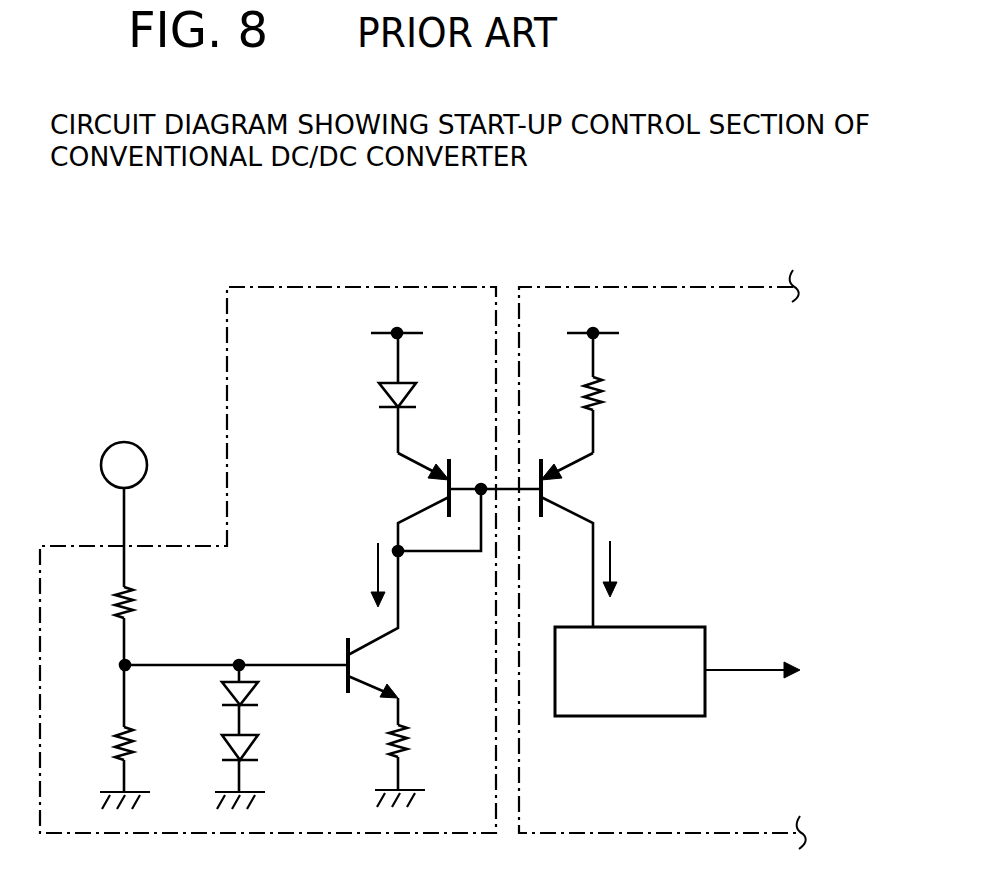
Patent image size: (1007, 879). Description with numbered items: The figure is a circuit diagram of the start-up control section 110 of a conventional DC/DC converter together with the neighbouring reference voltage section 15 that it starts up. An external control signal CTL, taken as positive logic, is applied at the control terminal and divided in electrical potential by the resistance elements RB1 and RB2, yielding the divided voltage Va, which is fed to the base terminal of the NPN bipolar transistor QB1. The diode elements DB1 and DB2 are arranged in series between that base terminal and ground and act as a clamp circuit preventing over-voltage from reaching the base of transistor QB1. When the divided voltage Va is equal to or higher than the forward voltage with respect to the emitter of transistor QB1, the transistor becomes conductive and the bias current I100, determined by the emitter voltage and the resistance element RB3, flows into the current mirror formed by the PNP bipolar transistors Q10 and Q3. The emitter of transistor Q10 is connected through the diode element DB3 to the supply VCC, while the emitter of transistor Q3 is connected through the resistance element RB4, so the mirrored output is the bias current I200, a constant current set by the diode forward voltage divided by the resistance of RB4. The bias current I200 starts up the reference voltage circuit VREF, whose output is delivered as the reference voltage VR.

The start-up control section 110 is at (392, 286).
The reference voltage circuit section 15 is at (588, 286).
The external control signal CTL is at (129, 501).
The resistance element RB1 is at (99, 626).
The resistance element RB2 is at (106, 737).
The resistance element RB3 is at (423, 766).
The resistance element RB4 is at (615, 390).
The diode element DB1 is at (268, 697).
The diode element DB2 is at (265, 772).
The diode element DB3 is at (425, 417).
The NPN bipolar transistor QB1 is at (388, 638).
The PNP bipolar transistor Q10 is at (455, 504).
The PNP bipolar transistor Q3 is at (577, 540).
The supply voltage VCC is at (395, 341).
The divided voltage Va is at (216, 672).
The bias current I100 is at (354, 575).
The bias current I200 is at (637, 569).
The reference voltage circuit VREF is at (630, 671).
The reference voltage output VR is at (774, 672).